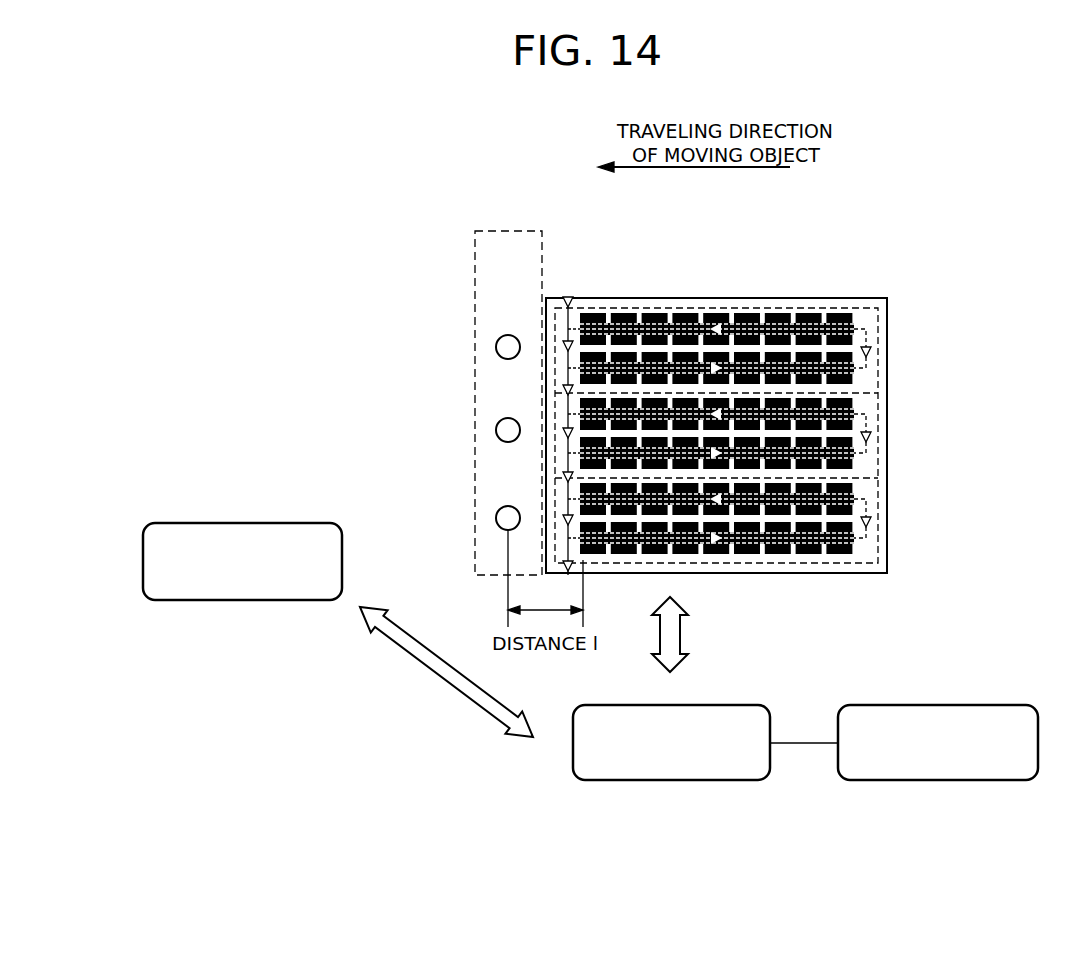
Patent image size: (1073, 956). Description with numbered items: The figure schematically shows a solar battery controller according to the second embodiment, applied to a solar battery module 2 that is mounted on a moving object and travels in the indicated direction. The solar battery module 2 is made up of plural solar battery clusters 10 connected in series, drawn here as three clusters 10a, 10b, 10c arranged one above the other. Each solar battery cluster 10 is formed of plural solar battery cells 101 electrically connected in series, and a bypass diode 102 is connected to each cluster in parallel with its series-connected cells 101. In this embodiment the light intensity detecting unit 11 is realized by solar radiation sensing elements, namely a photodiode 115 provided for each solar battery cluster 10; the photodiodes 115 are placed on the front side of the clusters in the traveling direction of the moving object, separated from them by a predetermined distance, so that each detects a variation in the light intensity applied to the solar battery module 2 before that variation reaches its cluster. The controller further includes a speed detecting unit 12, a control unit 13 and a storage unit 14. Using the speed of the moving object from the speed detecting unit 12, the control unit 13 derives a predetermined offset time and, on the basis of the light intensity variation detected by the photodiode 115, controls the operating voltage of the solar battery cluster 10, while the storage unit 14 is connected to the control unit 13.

The solar battery module 2 is at (784, 296).
The solar battery cluster 10 is at (773, 435).
The solar battery cluster 10a is at (878, 353).
The solar battery cluster 10b is at (878, 438).
The solar battery cluster 10c is at (878, 523).
The solar battery cell 101 is at (811, 312).
The bypass diode 102 is at (566, 342).
The light intensity detecting unit 11 is at (505, 226).
The photodiode 115 is at (496, 347).
The speed detecting unit 12 is at (258, 602).
The control unit 13 is at (693, 782).
The storage unit 14 is at (937, 782).